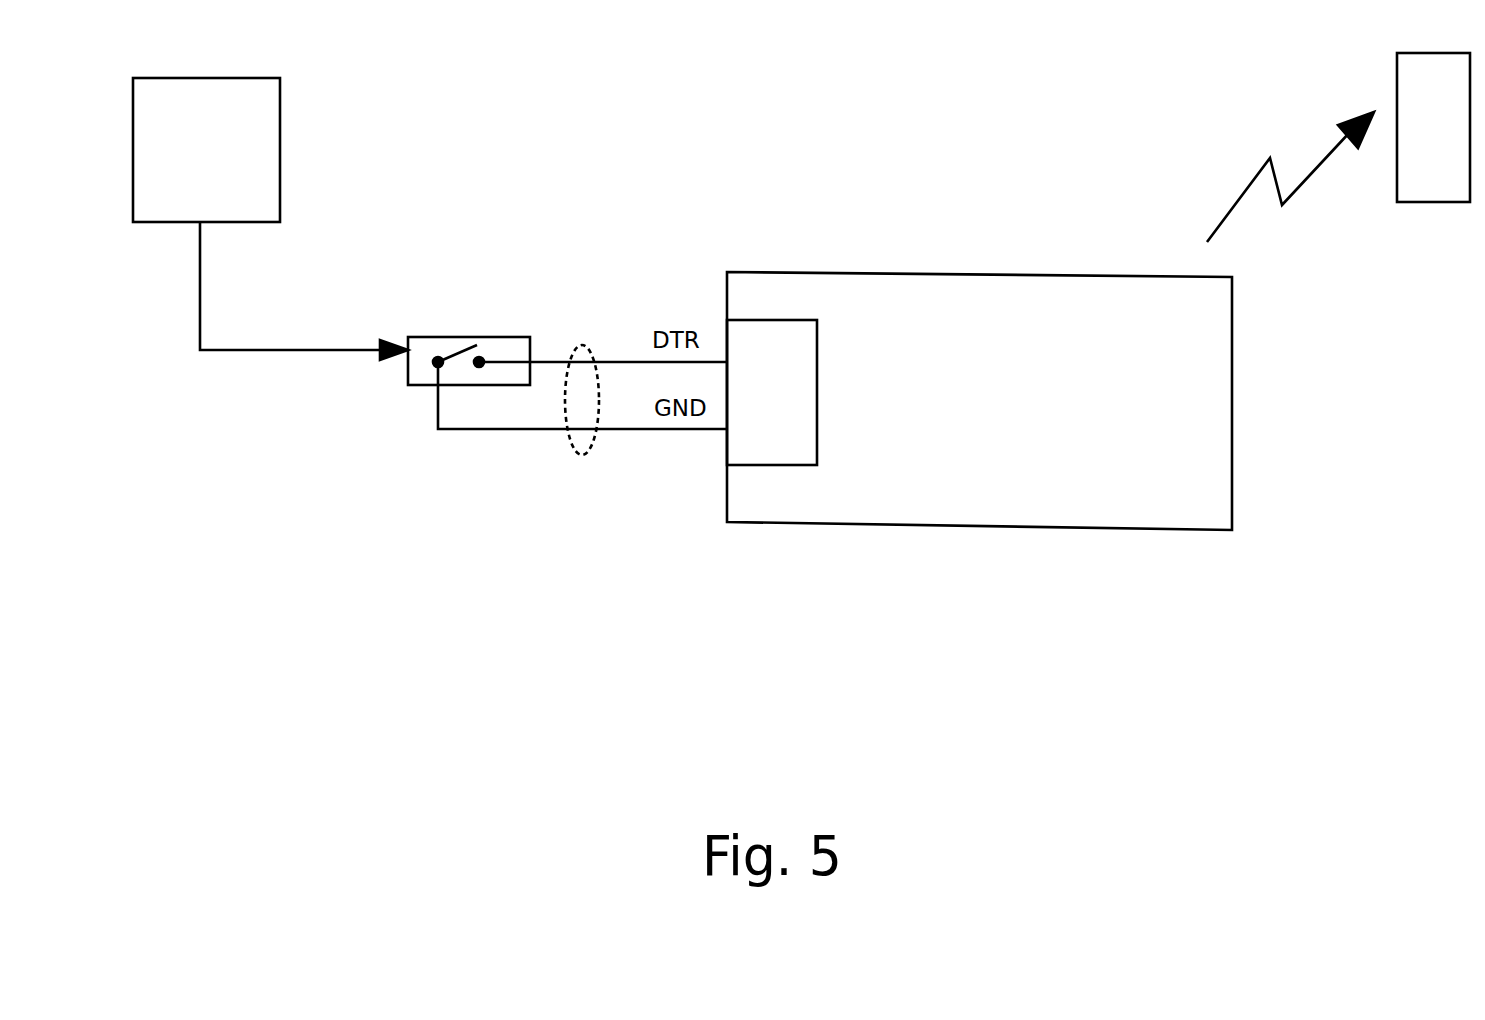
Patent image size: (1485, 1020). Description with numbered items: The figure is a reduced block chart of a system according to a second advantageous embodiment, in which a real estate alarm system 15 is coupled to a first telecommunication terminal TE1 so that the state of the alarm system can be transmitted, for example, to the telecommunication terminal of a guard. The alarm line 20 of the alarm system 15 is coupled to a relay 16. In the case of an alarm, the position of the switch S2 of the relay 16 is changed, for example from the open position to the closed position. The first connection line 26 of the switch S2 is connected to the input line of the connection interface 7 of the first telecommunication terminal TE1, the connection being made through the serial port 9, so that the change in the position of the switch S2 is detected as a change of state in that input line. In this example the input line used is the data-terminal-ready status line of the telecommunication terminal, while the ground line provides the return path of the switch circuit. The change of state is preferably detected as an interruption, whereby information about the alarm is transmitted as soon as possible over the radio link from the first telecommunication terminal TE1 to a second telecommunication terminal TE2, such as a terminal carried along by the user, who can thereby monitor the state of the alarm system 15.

The real estate alarm system 15 is at (280, 157).
The alarm line 20 is at (333, 350).
The relay 16 is at (428, 338).
The switch S2 is at (455, 348).
The first connection line 26 is at (533, 362).
The serial port 9 is at (590, 455).
The connection interface 7 is at (775, 466).
The first telecommunication terminal TE1 is at (840, 270).
The second telecommunication terminal TE2 is at (1455, 205).